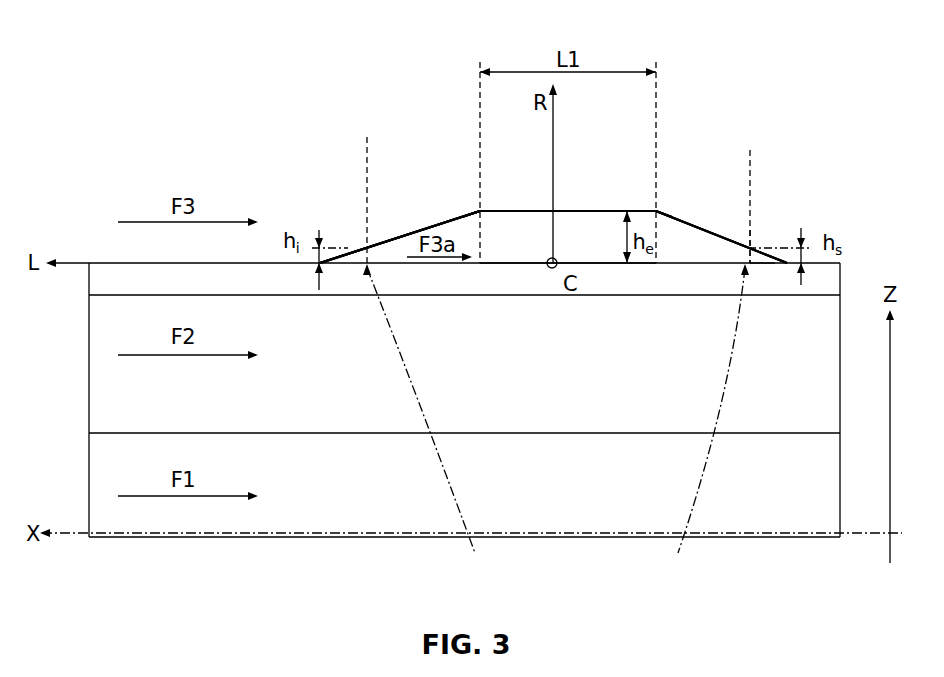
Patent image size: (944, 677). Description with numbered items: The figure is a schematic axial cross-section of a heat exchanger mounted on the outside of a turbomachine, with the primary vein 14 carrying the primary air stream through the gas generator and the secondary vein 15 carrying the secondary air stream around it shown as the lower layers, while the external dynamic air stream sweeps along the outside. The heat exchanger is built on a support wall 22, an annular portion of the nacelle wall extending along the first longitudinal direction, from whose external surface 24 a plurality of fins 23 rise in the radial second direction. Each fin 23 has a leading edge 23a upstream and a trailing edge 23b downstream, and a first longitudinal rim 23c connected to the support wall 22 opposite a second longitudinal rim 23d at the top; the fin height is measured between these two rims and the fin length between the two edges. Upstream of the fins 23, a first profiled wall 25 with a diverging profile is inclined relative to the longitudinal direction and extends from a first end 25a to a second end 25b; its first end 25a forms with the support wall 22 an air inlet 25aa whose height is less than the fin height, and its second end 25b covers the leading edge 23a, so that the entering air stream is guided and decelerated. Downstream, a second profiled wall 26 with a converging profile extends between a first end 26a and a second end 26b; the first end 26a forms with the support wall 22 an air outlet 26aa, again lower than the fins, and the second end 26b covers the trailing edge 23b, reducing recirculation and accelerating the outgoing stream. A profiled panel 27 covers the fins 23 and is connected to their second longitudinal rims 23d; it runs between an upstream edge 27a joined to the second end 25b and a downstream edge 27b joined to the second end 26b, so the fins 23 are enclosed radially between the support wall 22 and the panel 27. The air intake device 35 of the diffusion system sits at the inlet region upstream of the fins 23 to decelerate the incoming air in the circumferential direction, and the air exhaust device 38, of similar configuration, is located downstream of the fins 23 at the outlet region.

The primary vein 14 is at (746, 493).
The secondary vein 15 is at (746, 374).
The support wall 22 is at (693, 262).
The fin 23 is at (565, 225).
The leading edge 23a is at (472, 250).
The trailing edge 23b is at (664, 237).
The first longitudinal rim 23c is at (593, 264).
The second longitudinal rim 23d is at (517, 211).
The external surface 24 is at (750, 165).
The first profiled wall 25 is at (425, 228).
The first end 25a is at (341, 249).
The air inlet 25aa is at (429, 423).
The second end 25b is at (478, 212).
The second profiled wall 26 is at (729, 254).
The first end 26a is at (752, 243).
The air outlet 26aa is at (712, 423).
The second end 26b is at (658, 212).
The profiled panel 27 is at (600, 211).
The upstream edge 27a is at (481, 214).
The downstream edge 27b is at (654, 214).
The air intake device 35 is at (320, 262).
The air exhaust device 38 is at (763, 270).